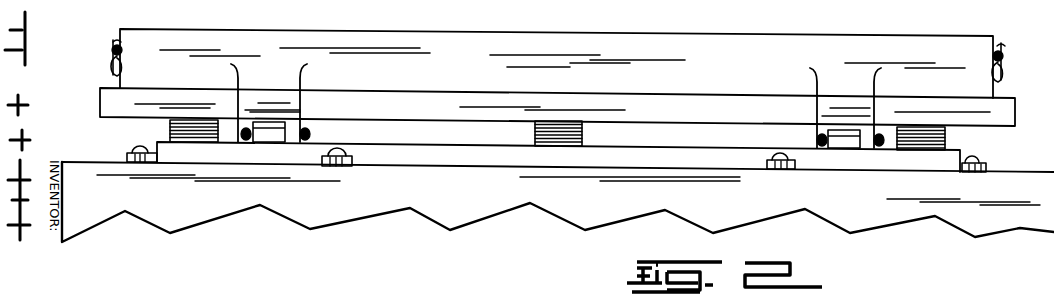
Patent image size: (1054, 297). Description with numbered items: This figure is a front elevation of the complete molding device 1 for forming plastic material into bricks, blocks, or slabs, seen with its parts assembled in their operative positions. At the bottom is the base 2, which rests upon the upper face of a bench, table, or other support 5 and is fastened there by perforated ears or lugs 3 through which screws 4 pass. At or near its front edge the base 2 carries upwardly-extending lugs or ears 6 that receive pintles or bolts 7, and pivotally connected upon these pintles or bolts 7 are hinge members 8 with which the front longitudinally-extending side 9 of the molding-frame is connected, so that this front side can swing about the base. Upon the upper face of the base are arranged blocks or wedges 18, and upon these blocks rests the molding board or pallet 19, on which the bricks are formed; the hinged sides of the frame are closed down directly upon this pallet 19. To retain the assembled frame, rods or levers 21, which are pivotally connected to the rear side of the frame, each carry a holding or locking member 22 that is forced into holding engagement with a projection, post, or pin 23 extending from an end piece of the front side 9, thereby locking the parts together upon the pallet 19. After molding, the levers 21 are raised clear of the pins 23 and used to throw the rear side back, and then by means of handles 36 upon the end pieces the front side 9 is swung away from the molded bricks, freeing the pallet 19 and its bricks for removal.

The molding device 1 is at (556, 56).
The base 2 is at (448, 156).
The perforated ears or lugs 3 is at (136, 158).
The screws 4 is at (138, 150).
The support 5 is at (408, 198).
The upwardly-extending lugs or ears 6 is at (270, 130).
The pintles or bolts 7 is at (238, 142).
The hinge members 8 is at (275, 93).
The front longitudinally-extending side 9 is at (742, 47).
The blocks or wedges 18 is at (170, 128).
The molding board or pallet 19 is at (400, 100).
The rods or levers 21 is at (116, 42).
The holding or locking member 22 is at (121, 50).
The projection, post, or pin 23 is at (110, 50).
The handles 36 is at (115, 70).